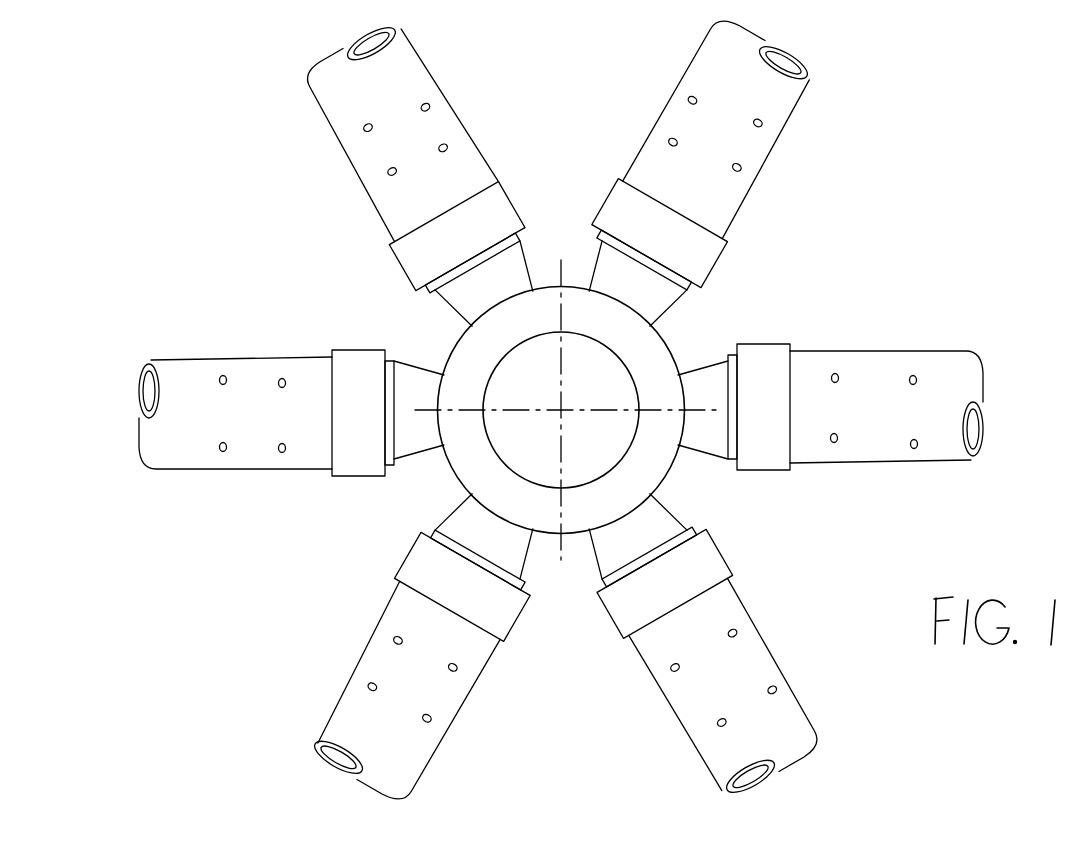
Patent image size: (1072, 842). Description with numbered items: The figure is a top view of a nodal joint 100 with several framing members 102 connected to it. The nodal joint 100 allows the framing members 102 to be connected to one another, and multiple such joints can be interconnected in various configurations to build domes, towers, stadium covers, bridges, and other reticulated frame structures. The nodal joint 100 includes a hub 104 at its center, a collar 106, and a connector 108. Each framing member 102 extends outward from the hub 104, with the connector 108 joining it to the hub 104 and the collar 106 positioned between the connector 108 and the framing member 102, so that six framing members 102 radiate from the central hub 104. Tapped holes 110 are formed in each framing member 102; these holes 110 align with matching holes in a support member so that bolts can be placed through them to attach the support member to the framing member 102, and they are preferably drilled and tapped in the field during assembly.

The nodal joint 100 is at (830, 252).
The framing member 102 is at (877, 362).
The hub 104 is at (665, 358).
The collar 106 is at (768, 462).
The connector 108 is at (707, 433).
The tapped holes 110 is at (908, 443).